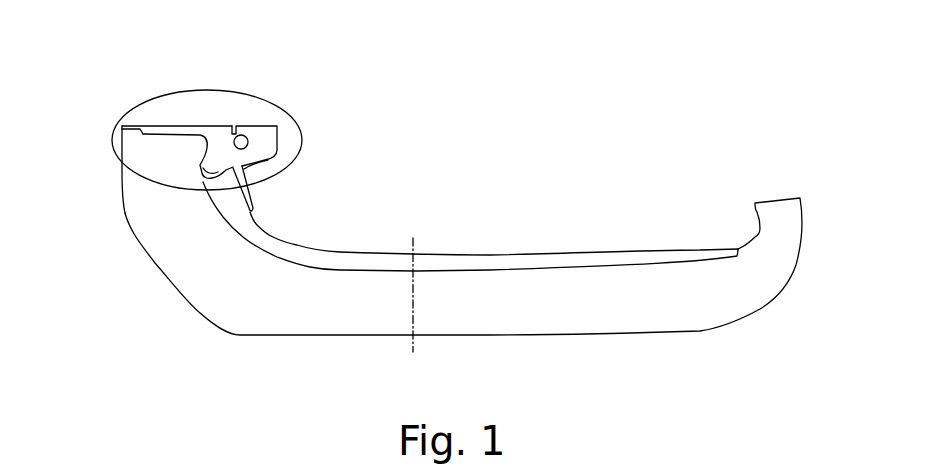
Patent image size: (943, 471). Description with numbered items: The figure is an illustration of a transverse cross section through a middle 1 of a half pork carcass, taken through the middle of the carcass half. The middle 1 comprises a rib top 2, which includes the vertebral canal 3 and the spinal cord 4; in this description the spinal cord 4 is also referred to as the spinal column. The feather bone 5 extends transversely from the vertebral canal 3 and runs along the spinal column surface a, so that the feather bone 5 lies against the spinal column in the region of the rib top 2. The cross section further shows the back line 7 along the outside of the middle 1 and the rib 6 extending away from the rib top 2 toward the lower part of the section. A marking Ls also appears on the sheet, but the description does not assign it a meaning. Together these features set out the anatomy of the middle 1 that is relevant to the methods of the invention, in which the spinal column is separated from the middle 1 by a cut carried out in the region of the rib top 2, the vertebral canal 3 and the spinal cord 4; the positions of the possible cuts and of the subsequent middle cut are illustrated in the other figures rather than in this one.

The middle 1 is at (712, 52).
The rib top 2 is at (184, 78).
The vertebral canal 3 is at (255, 116).
The spinal cord 4 is at (248, 138).
The feather bone 5 is at (146, 112).
The rib 6 is at (414, 275).
The back line 7 is at (110, 184).
The spinal column surface a is at (203, 115).
The lever length Ls is at (232, 470).